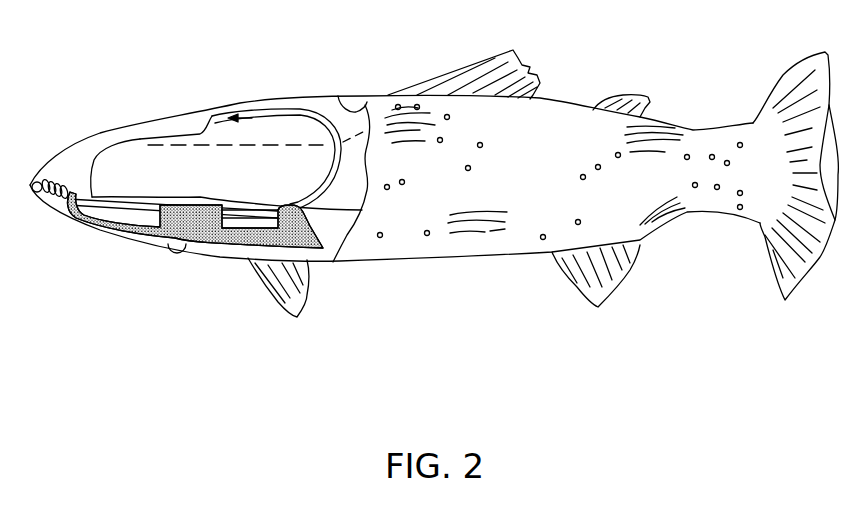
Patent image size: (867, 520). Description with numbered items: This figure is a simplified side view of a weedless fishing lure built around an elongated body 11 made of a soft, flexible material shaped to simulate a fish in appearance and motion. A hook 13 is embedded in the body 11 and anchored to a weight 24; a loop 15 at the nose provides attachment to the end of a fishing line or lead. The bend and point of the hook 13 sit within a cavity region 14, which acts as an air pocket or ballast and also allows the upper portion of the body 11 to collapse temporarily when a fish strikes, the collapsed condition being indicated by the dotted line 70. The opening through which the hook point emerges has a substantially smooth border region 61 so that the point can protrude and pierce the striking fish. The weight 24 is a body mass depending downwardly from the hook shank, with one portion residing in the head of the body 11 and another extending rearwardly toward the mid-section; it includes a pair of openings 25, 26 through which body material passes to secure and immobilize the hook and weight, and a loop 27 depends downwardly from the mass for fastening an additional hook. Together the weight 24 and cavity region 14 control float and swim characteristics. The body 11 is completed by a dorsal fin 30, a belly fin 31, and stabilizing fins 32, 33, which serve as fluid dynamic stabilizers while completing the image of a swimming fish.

The elongated body 11 is at (557, 117).
The hook 13 is at (290, 102).
The cavity region 14 is at (237, 173).
The loop 15 is at (31, 184).
The weight 24 is at (320, 243).
The opening 25 is at (117, 210).
The opening 26 is at (240, 222).
The loop 27 is at (174, 253).
The dorsal fin 30 is at (513, 50).
The belly fin 31 is at (308, 295).
The stabilizing fin 32 is at (646, 99).
The stabilizing fin 33 is at (612, 280).
The border region 61 is at (210, 120).
The dotted line 70 is at (131, 135).